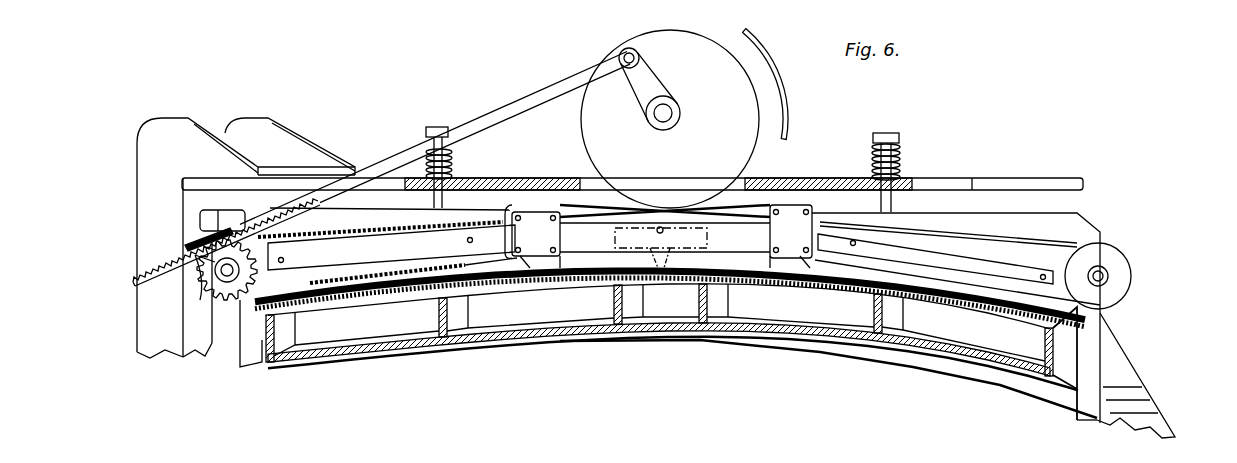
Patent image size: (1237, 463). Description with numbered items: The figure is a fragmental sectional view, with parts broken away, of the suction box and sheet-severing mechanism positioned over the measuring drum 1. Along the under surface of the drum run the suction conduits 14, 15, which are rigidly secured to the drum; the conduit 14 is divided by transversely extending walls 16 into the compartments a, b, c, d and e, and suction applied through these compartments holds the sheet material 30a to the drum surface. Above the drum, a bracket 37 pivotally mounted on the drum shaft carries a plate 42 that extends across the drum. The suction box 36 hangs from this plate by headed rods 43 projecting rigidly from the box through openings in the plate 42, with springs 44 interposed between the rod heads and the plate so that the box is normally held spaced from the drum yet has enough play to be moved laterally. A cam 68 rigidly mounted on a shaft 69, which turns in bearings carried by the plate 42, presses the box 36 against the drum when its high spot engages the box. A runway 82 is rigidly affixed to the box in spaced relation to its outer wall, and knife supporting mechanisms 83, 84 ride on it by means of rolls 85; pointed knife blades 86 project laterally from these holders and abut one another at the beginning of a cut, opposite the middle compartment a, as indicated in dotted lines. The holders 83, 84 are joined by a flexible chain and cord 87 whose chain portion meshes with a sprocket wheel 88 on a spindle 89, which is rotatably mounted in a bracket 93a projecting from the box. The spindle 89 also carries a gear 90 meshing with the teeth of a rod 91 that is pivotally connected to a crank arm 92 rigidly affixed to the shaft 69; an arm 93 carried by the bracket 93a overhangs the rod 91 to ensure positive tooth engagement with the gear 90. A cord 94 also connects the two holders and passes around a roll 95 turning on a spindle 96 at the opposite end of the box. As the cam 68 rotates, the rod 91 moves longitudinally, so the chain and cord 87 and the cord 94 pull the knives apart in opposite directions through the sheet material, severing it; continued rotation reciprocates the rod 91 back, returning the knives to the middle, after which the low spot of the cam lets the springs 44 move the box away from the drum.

The measuring drum 1 is at (1140, 397).
The suction conduit 14 is at (1052, 382).
The suction conduit 15 is at (1095, 420).
The transversely extending walls 16 is at (443, 328).
The sheet material 30a is at (1008, 302).
The suction box 36 is at (1085, 236).
The bracket 37 is at (200, 118).
The plate 42 is at (815, 180).
The headed rods 43 is at (436, 127).
The springs 44 is at (455, 166).
The cam 68 is at (705, 50).
The shaft 69 is at (680, 112).
The runway 82 is at (1005, 269).
The knife supporting mechanism 83 is at (545, 207).
The knife supporting mechanism 84 is at (795, 223).
The rolls 85 is at (512, 208).
The pointed knife blades 86 is at (562, 263).
The flexible chain and cord 87 is at (382, 231).
The sprocket wheel 88 is at (268, 256).
The spindle 89 is at (228, 283).
The gear 90 is at (198, 272).
The rod 91 is at (535, 98).
The crank arm 92 is at (650, 76).
The arm 93 is at (185, 246).
The bracket 93a is at (262, 214).
The cord 94 is at (958, 237).
The roll 95 is at (1130, 279).
The spindle 96 is at (1104, 283).
The compartment a is at (658, 318).
The compartment b is at (352, 345).
The compartment c is at (542, 320).
The compartment d is at (800, 330).
The compartment e is at (956, 345).